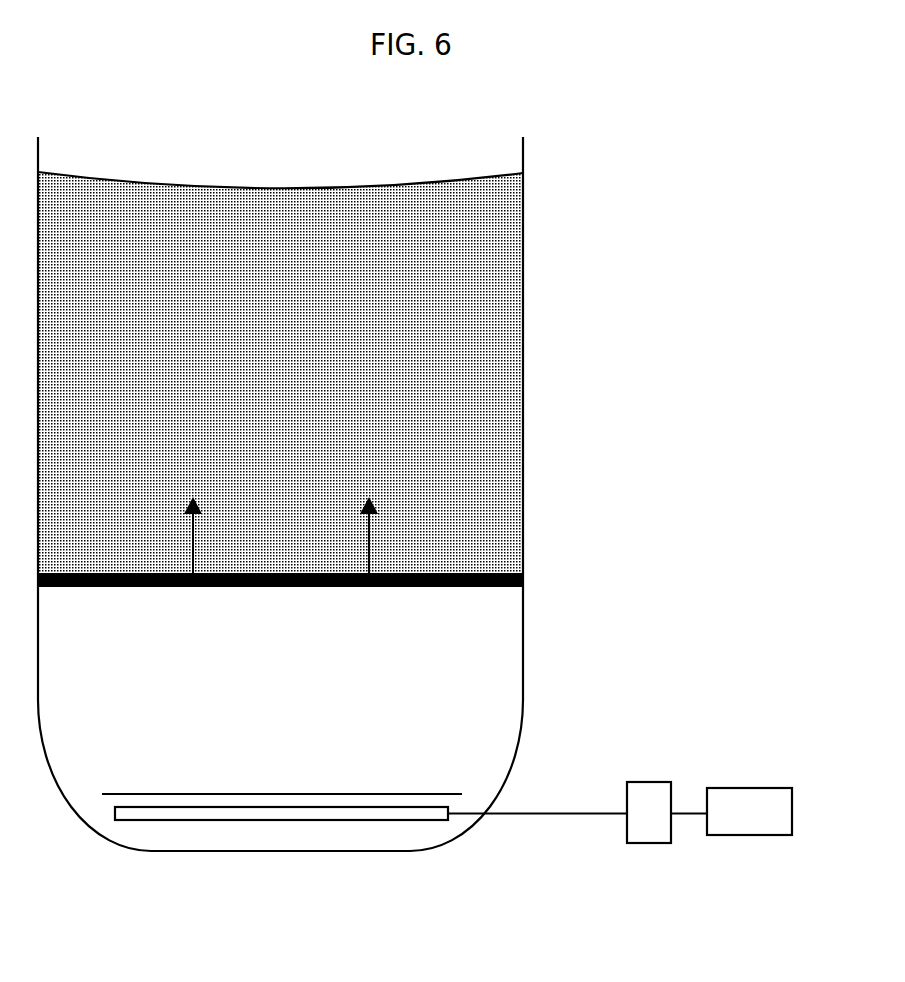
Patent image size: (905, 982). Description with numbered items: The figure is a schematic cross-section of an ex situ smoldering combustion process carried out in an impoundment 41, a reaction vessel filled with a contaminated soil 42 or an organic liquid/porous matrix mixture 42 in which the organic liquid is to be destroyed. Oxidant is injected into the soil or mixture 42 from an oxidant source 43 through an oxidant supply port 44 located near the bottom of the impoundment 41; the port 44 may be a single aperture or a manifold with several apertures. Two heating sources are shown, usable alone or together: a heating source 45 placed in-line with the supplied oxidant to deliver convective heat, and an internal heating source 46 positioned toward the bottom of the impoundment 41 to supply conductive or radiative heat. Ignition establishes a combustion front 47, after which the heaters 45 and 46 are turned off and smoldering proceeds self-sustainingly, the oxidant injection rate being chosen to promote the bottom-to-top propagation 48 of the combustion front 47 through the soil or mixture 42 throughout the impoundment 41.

The impoundment 41 is at (524, 349).
The contaminated soil or organic liquid/porous matrix mixture 42 is at (442, 436).
The oxidant source 43 is at (750, 836).
The oxidant supply port 44 is at (276, 821).
The heating source 45 is at (648, 844).
The internal heating source 46 is at (276, 793).
The combustion front 47 is at (275, 588).
The propagation 48 is at (191, 536).